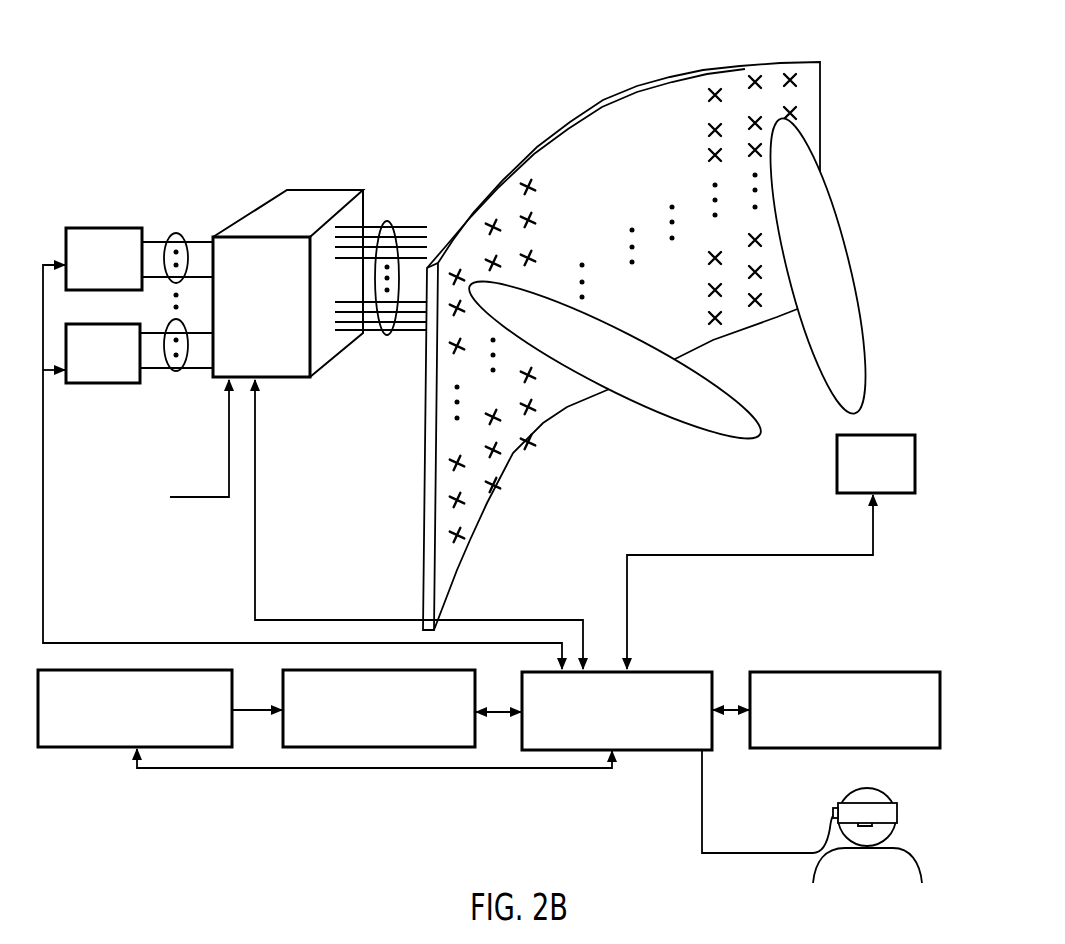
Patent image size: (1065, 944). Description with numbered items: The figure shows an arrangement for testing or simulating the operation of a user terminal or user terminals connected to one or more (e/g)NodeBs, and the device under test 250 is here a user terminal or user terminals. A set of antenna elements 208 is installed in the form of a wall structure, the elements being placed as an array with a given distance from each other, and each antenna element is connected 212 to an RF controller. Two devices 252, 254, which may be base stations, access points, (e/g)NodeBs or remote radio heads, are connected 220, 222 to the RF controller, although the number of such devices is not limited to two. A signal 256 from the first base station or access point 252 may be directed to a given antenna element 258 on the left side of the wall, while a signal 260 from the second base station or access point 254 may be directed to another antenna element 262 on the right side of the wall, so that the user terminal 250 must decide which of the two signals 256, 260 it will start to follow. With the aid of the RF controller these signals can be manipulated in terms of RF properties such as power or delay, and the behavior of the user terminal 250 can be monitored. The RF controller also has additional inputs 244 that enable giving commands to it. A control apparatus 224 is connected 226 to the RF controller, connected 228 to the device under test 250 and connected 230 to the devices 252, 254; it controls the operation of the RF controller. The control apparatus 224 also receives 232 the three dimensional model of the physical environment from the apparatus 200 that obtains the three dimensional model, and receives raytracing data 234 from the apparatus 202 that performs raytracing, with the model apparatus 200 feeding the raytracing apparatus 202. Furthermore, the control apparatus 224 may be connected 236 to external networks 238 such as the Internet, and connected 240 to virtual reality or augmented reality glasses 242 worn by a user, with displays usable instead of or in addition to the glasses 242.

The apparatus to obtain a 3D model 200 is at (48, 748).
The apparatus to perform raytracing 202 is at (297, 748).
The set of antenna elements 208 is at (666, 321).
The connection of antenna elements to RF controller 212 is at (383, 218).
The connection of first device to RF controller 220 is at (302, 188).
The connection of second device to RF controller 222 is at (173, 372).
The control apparatus 224 is at (643, 751).
The connection of control apparatus to RF controller 226 is at (255, 505).
The connection of control apparatus to DUT 228 is at (813, 555).
The connection of control apparatus to devices 230 is at (58, 643).
The reception of 3D model 232 is at (158, 768).
The raytracing data 234 is at (495, 713).
The connection to external networks 236 is at (730, 710).
The external networks 238 is at (877, 672).
The connection to VR or AR glasses 240 is at (702, 803).
The virtual reality or augmented reality glasses 242 is at (897, 813).
The additional inputs 244 is at (200, 497).
The device under test 250 is at (873, 435).
The first base station or access point 252 is at (77, 228).
The second base station or access point 254 is at (70, 383).
The signal from first base station 256 is at (633, 403).
The antenna element on left side of wall 258 is at (470, 183).
The signal from second base station 260 is at (850, 263).
The antenna element on right side of wall 262 is at (845, 117).